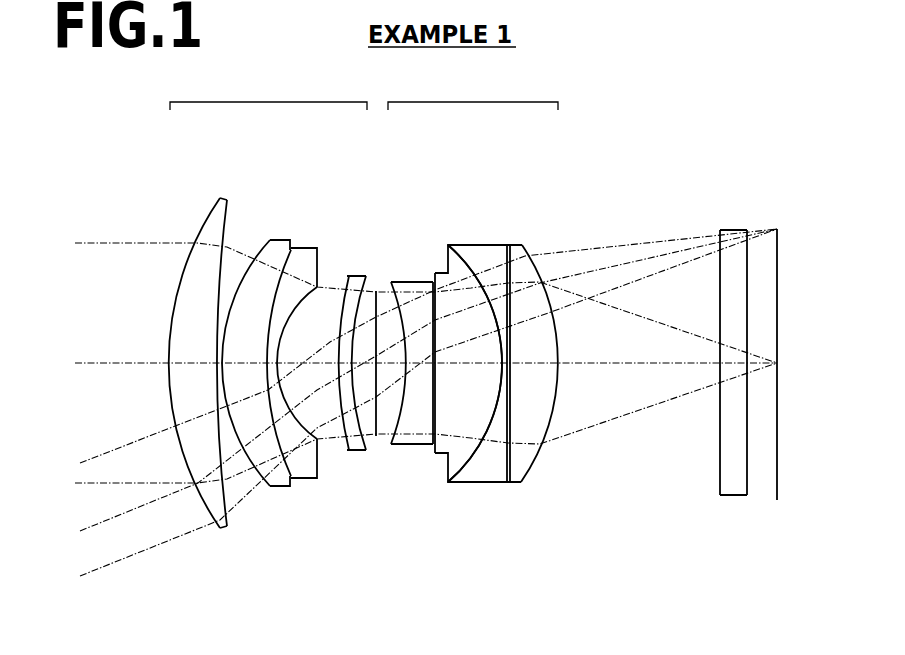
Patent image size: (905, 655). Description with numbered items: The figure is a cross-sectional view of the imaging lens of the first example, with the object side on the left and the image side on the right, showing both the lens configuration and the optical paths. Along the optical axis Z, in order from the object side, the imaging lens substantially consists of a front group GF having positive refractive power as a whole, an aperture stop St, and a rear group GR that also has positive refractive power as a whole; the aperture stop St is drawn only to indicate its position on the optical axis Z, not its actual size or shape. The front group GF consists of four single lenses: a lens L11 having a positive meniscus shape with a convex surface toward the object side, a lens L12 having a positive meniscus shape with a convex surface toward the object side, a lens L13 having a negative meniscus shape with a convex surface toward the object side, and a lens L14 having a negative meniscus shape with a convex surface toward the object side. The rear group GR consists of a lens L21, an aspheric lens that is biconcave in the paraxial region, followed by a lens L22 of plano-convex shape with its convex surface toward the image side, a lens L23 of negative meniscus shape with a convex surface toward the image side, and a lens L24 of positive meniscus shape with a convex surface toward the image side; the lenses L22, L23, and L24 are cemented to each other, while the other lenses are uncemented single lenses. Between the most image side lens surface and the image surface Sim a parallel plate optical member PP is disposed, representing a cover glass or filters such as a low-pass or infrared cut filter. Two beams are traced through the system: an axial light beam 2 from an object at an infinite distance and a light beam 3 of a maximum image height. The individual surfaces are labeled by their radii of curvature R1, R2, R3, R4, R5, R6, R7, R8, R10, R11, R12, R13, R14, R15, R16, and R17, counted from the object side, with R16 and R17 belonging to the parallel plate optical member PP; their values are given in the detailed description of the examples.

The front group GF is at (268, 93).
The rear group GR is at (473, 93).
The optical axis Z is at (92, 359).
The lens L11 is at (202, 370).
The lens L12 is at (258, 383).
The lens L13 is at (293, 355).
The lens L14 is at (339, 368).
The aperture stop St is at (376, 378).
The lens L21 is at (411, 355).
The lens L22 is at (457, 368).
The lens L23 is at (485, 370).
The lens L24 is at (550, 383).
The parallel plate optical member PP is at (715, 391).
The image surface Sim is at (779, 230).
The axial light beam 2 is at (623, 413).
The light beam of maximum image height 3 is at (638, 244).
The radius of curvature R1 is at (204, 504).
The radius of curvature R2 is at (229, 502).
The radius of curvature R3 is at (261, 474).
The radius of curvature R4 is at (290, 478).
The radius of curvature R5 is at (316, 444).
The radius of curvature R6 is at (345, 452).
The radius of curvature R7 is at (362, 453).
The radius of curvature R8 is at (376, 440).
The radius of curvature R10 is at (394, 447).
The radius of curvature R11 is at (435, 456).
The radius of curvature R12 is at (470, 452).
The radius of curvature R13 is at (506, 440).
The radius of curvature R14 is at (512, 470).
The radius of curvature R15 is at (538, 462).
The radius of curvature R16 is at (720, 494).
The radius of curvature R17 is at (748, 497).